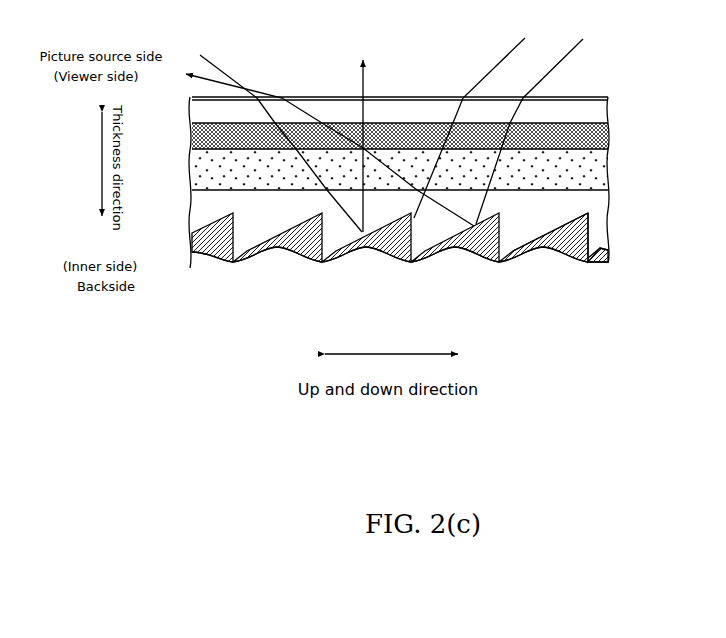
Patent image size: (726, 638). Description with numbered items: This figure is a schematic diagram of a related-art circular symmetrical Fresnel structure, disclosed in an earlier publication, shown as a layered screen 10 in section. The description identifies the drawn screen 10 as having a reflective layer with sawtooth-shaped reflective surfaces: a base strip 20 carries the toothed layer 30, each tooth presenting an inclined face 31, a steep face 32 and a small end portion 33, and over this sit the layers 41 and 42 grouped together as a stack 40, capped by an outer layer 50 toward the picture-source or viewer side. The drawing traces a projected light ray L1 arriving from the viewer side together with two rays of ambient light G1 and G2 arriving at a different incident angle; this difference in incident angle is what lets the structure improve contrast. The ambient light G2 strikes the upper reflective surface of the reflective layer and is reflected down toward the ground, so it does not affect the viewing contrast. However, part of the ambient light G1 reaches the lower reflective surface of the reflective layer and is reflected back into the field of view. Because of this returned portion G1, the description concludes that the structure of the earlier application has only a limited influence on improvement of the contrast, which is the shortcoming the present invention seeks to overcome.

The optical sheet 10 is at (644, 288).
The base layer 20 is at (540, 250).
The prism layer 30 is at (603, 205).
The inclined surface of unit prism 31 is at (510, 243).
The vertical surface of unit prism 32 is at (558, 248).
The flat portion 33 is at (607, 260).
The diffusion layer 40 is at (456, 156).
The light diffusing layer 41 is at (610, 172).
The light absorbing layer 42 is at (611, 138).
The surface layer 50 is at (603, 113).
The incident light ray L1 is at (221, 69).
The ambient light G1 is at (509, 53).
The ambient light G2 is at (568, 54).